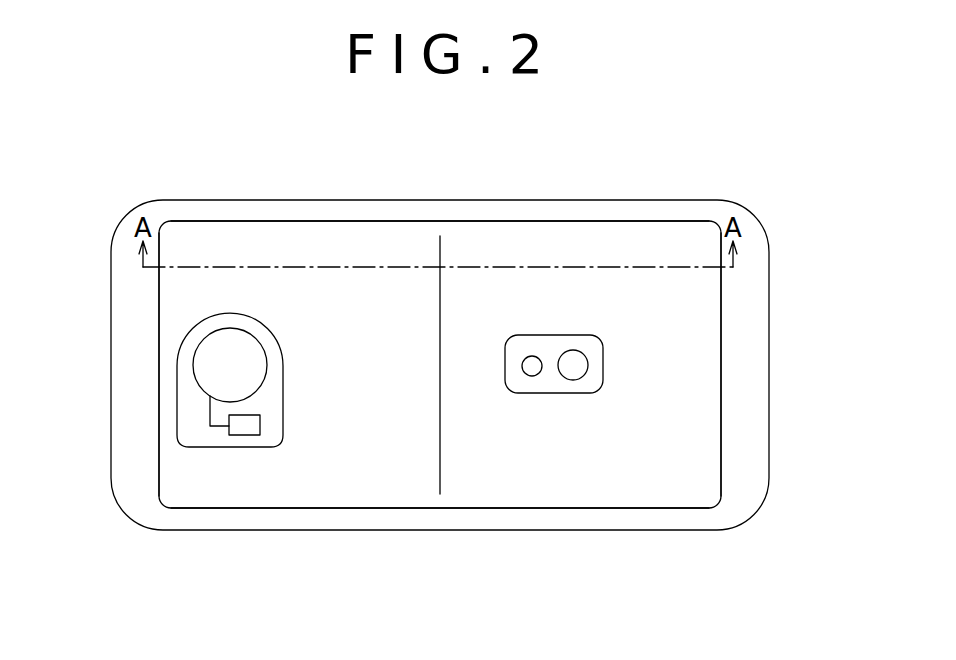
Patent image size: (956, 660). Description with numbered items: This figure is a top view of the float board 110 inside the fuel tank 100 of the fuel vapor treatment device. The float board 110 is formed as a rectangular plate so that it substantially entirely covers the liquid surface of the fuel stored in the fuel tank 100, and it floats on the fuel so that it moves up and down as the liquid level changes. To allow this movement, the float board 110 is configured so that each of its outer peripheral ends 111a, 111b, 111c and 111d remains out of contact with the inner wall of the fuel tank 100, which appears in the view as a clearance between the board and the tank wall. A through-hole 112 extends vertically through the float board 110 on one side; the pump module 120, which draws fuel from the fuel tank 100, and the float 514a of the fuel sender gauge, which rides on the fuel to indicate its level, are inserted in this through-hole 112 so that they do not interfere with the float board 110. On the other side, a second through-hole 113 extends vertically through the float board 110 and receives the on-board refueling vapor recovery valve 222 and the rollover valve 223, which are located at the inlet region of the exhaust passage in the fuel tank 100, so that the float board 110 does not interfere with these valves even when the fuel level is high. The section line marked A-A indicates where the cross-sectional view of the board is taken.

The fuel tank 100 is at (625, 200).
The float board 110 is at (619, 490).
The outer peripheral end 111a is at (476, 221).
The outer peripheral end 111b is at (159, 395).
The outer peripheral end 111c is at (365, 508).
The outer peripheral end 111d is at (722, 375).
The through-hole 112 is at (273, 406).
The through-hole 113 is at (545, 393).
The pump module 120 is at (266, 347).
The ORVR valve 222 is at (574, 350).
The rollover valve 223 is at (533, 356).
The float 514a is at (246, 435).